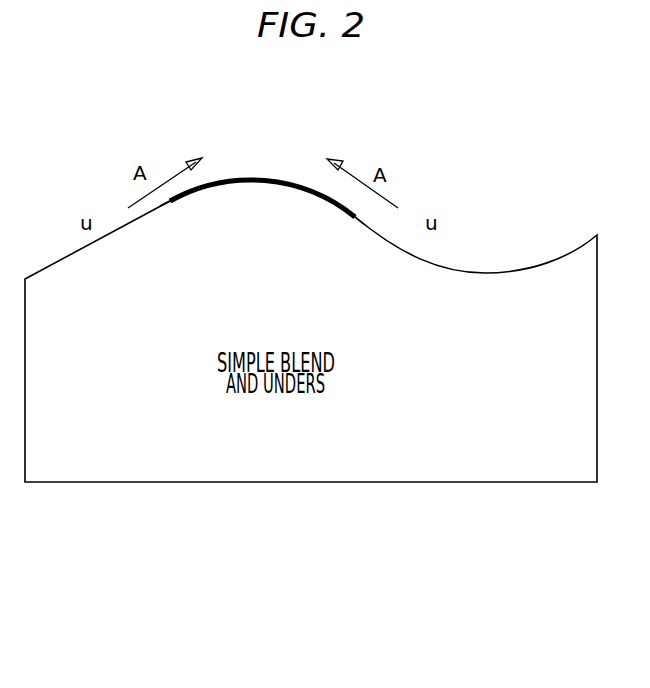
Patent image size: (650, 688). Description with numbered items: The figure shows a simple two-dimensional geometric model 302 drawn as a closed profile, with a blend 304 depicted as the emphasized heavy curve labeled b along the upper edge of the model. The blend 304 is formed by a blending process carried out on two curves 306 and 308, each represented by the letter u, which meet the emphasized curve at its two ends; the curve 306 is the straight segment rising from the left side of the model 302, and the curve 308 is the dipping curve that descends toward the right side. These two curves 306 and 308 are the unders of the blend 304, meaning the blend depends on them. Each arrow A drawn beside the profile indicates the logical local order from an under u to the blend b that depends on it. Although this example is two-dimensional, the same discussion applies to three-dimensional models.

The simple geometric model 302 is at (538, 450).
The blend 304 is at (287, 172).
The curve 306 is at (162, 213).
The curve 308 is at (356, 229).